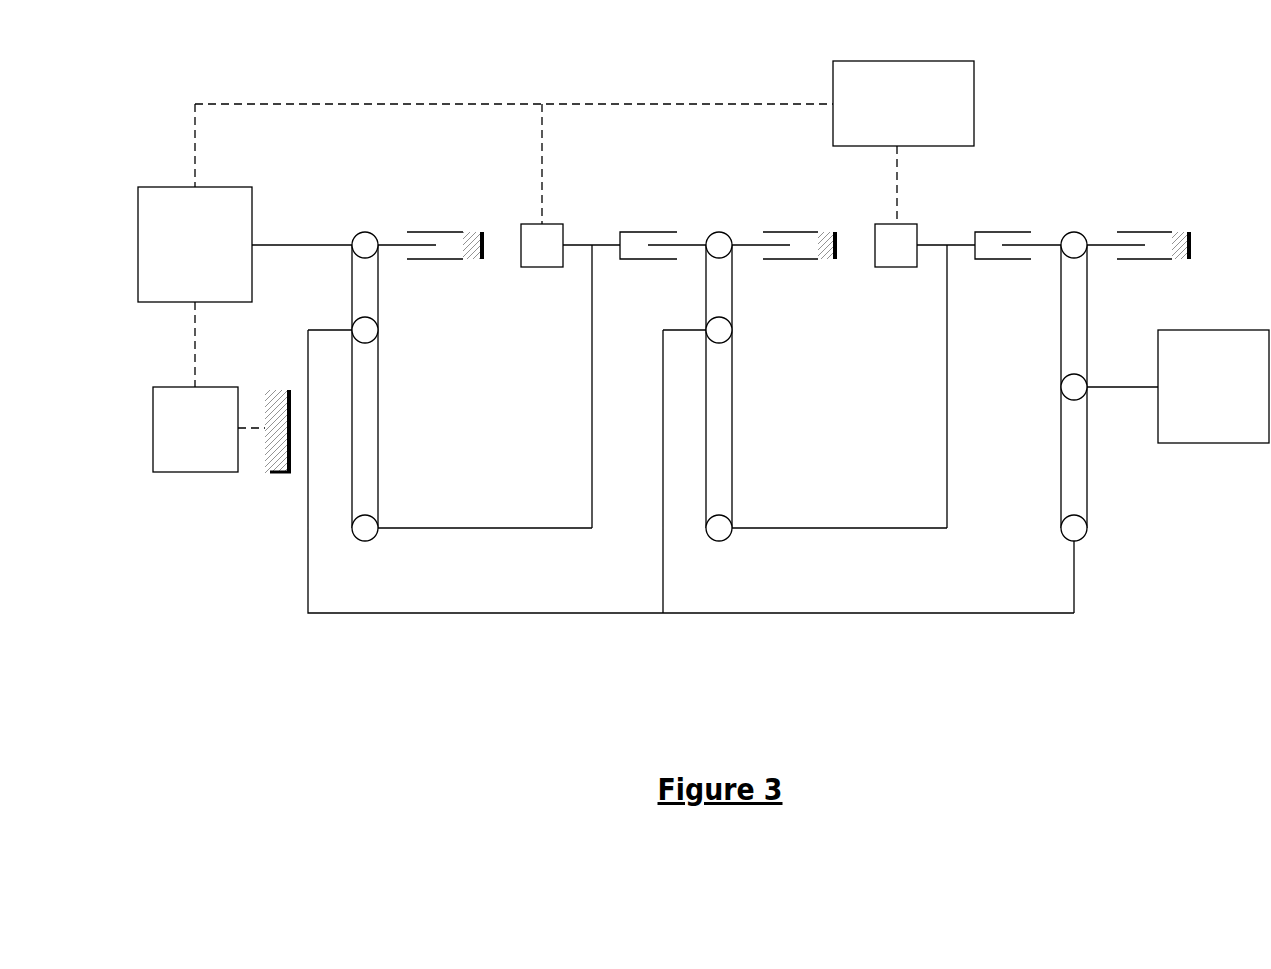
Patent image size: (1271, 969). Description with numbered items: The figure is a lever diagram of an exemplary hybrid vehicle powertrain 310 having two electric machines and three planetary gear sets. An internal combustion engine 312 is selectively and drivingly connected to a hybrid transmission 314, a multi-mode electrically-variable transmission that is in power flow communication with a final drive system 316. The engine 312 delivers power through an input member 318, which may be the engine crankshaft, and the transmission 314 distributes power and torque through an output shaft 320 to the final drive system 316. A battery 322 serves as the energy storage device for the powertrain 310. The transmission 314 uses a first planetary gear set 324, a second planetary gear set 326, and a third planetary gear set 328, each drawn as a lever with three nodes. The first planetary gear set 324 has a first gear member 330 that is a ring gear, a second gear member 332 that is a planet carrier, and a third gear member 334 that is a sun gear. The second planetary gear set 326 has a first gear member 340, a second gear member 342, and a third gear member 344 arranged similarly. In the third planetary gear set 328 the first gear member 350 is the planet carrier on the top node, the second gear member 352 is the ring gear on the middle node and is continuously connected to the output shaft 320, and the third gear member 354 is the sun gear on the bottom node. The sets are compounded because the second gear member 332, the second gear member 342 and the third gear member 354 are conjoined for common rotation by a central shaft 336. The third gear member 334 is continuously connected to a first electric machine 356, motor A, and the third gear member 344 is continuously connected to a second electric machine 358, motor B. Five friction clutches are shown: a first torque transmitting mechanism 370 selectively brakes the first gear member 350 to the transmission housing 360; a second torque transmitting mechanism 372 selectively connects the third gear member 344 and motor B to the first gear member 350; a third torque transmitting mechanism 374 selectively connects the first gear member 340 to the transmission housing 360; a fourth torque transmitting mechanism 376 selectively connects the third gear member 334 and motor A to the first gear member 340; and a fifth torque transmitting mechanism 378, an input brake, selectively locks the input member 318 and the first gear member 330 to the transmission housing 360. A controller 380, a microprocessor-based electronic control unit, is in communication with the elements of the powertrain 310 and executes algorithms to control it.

The powertrain 310 is at (222, 710).
The internal combustion engine 312 is at (172, 187).
The hybrid transmission 314 is at (500, 74).
The final drive system 316 is at (1233, 443).
The input member 318 is at (318, 245).
The output shaft 320 is at (1123, 387).
The battery 322 is at (974, 101).
The first planetary gear set 324 is at (375, 354).
The second planetary gear set 326 is at (731, 353).
The third planetary gear set 328 is at (1071, 332).
The first gear member 330 is at (358, 233).
The second gear member 332 is at (378, 333).
The third gear member 334 is at (365, 541).
The central shaft 336 is at (690, 613).
The first gear member 340 is at (712, 233).
The second gear member 342 is at (732, 333).
The third gear member 344 is at (719, 541).
The first gear member 350 is at (1068, 233).
The second gear member 352 is at (1061, 387).
The third gear member 354 is at (1087, 531).
The first electric machine 356 is at (542, 267).
The second electric machine 358 is at (897, 267).
The transmission housing 360 is at (470, 259).
The first torque transmitting mechanism 370 is at (1145, 232).
The second torque transmitting mechanism 372 is at (1002, 232).
The third torque transmitting mechanism 374 is at (790, 232).
The fourth torque transmitting mechanism 376 is at (648, 232).
The fifth torque transmitting mechanism 378 is at (435, 232).
The controller 380 is at (172, 472).